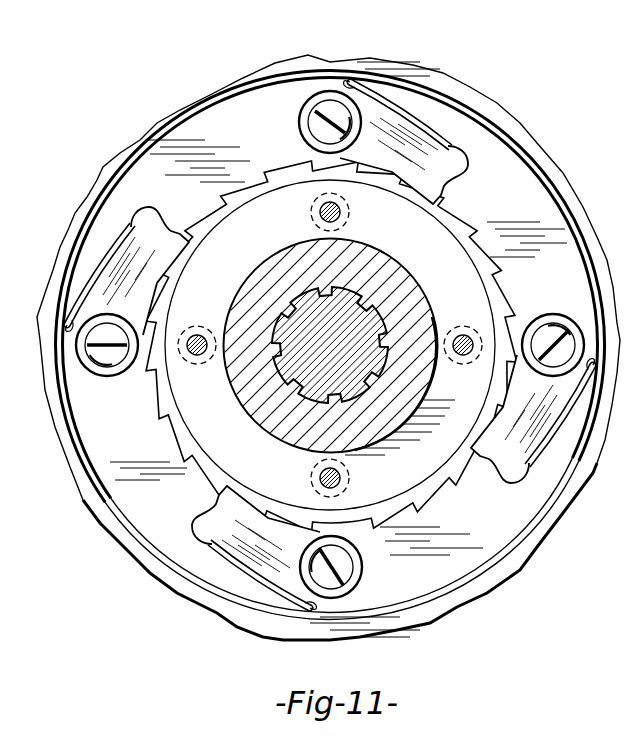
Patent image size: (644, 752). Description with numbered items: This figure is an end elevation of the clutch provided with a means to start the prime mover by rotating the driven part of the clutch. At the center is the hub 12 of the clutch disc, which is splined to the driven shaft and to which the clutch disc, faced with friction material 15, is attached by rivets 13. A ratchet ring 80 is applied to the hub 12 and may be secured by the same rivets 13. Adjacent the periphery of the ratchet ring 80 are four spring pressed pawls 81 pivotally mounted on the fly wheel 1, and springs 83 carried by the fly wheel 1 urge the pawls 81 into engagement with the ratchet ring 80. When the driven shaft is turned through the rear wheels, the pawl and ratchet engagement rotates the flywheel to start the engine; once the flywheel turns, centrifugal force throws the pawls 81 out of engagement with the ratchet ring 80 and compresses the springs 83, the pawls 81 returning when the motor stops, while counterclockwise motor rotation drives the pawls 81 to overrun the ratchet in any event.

The fly wheel 1 is at (257, 134).
The hub 12 is at (215, 414).
The rivets 13 is at (325, 490).
The friction material 15 is at (402, 74).
The ratchet ring 80 is at (163, 397).
The pawls 81 is at (220, 522).
The springs 83 is at (237, 562).